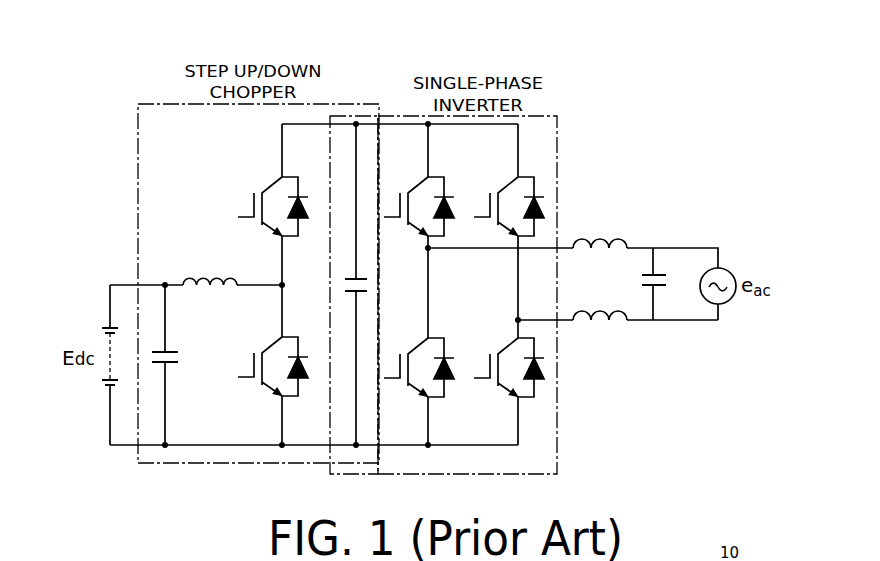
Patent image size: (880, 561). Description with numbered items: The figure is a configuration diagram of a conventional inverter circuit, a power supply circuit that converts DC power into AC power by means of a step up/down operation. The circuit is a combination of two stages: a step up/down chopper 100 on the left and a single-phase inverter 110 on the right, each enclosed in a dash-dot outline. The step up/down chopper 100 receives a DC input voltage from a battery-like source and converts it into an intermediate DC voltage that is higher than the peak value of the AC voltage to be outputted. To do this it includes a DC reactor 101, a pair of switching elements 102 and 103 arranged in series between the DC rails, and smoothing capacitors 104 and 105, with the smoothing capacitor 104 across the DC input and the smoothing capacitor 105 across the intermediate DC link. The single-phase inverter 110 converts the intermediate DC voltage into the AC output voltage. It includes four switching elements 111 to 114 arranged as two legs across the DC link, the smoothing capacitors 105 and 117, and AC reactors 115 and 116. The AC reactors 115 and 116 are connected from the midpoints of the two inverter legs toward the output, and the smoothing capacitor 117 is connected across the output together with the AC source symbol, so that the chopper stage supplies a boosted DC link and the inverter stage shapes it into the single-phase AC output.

The step up/down chopper 100 is at (357, 105).
The single-phase inverter 110 is at (537, 115).
The DC reactor 101 is at (205, 276).
The switching element 102 is at (263, 193).
The switching element 103 is at (263, 382).
The smoothing capacitor 104 is at (172, 350).
The smoothing capacitor 105 is at (345, 290).
The switching element 111 is at (410, 193).
The switching element 112 is at (410, 352).
The switching element 113 is at (498, 193).
The switching element 114 is at (498, 352).
The AC reactor 115 is at (603, 242).
The AC reactor 116 is at (603, 326).
The smoothing capacitor 117 is at (643, 288).